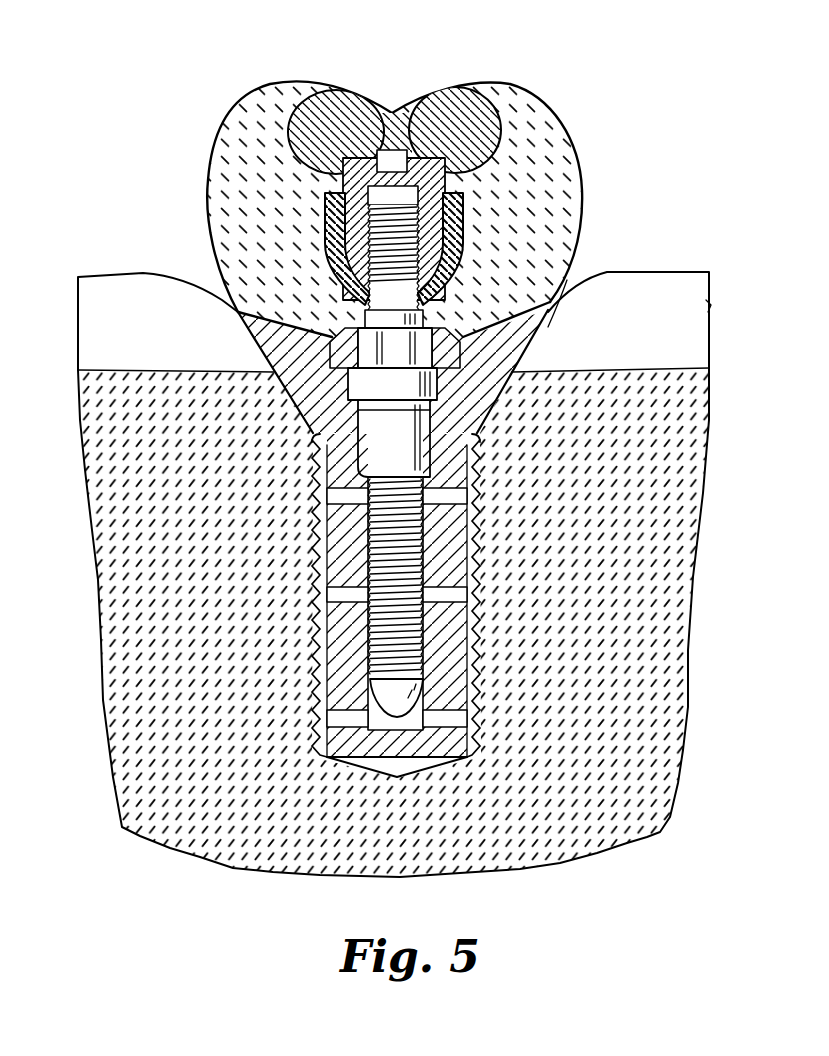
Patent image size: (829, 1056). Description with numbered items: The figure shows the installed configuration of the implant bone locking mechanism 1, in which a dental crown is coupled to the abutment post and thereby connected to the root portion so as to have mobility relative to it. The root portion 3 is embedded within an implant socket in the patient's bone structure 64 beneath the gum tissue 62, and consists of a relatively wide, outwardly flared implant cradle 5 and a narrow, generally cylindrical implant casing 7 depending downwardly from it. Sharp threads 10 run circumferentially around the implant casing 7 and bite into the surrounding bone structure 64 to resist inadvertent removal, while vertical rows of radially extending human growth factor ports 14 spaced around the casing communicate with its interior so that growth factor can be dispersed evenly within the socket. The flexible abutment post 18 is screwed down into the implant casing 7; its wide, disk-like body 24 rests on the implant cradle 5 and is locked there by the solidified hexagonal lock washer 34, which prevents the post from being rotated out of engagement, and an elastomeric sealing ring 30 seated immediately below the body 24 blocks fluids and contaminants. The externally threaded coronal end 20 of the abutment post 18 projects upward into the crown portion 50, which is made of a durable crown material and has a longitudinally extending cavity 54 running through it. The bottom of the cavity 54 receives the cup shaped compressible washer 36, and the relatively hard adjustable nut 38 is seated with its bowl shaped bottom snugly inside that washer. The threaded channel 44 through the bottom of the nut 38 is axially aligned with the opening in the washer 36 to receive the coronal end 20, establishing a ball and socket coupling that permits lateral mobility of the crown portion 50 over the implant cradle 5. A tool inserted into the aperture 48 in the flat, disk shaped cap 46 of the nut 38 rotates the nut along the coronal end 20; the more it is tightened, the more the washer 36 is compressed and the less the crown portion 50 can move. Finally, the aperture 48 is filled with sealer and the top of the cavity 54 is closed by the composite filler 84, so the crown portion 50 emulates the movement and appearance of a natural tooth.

The implant bone locking mechanism 1 is at (101, 187).
The root portion 3 is at (398, 603).
The implant cradle 5 is at (590, 277).
The implant casing 7 is at (333, 653).
The sharp threads 10 is at (477, 652).
The human growth factor ports 14 is at (337, 495).
The abutment post 18 is at (362, 529).
The coronal end 20 is at (383, 240).
The body 24 is at (357, 387).
The elastomeric sealing ring 30 is at (480, 414).
The washer 34 is at (322, 292).
The compressible washer 36 is at (463, 200).
The adjustable nut 38 is at (330, 192).
The threaded channel 44 is at (433, 160).
The cap 46 is at (373, 160).
The aperture 48 is at (392, 150).
The crown portion 50 is at (445, 194).
The cavity 54 is at (462, 262).
The gum tissue 62 is at (693, 308).
The bone structure 64 is at (693, 390).
The composite filler 84 is at (423, 107).